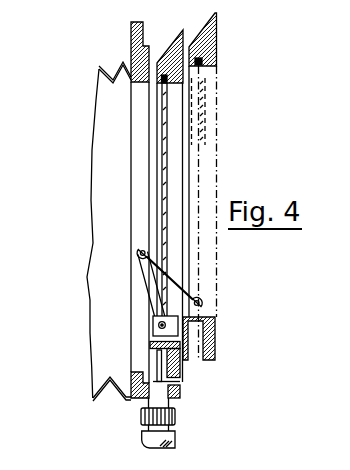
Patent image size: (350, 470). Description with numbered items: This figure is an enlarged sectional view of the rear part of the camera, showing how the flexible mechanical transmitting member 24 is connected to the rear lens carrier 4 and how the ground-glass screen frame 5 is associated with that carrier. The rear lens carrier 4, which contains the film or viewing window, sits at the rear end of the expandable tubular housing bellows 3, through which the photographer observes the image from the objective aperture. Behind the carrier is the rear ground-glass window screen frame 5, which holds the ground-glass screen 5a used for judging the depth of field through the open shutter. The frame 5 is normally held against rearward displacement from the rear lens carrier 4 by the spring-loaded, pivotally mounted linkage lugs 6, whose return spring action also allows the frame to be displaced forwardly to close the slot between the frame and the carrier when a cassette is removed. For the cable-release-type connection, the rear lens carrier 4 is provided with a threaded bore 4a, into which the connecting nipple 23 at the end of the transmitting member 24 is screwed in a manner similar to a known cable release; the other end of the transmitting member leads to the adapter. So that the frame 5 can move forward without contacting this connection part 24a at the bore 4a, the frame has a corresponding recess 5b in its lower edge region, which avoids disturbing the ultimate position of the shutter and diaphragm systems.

The tubular housing bellows 3 is at (108, 226).
The rear lens carrier 4 is at (143, 55).
The threaded bore 4a is at (138, 381).
The rear ground-glass window screen frame 5 is at (205, 49).
The ground-glass screen 5a is at (165, 157).
The recess 5b is at (163, 358).
The spring-loaded pivotally mounted linkage lugs 6 is at (147, 280).
The connecting nipple 23 is at (153, 416).
The mechanical transmitting member 24 is at (153, 438).
The bracket 24a is at (183, 373).